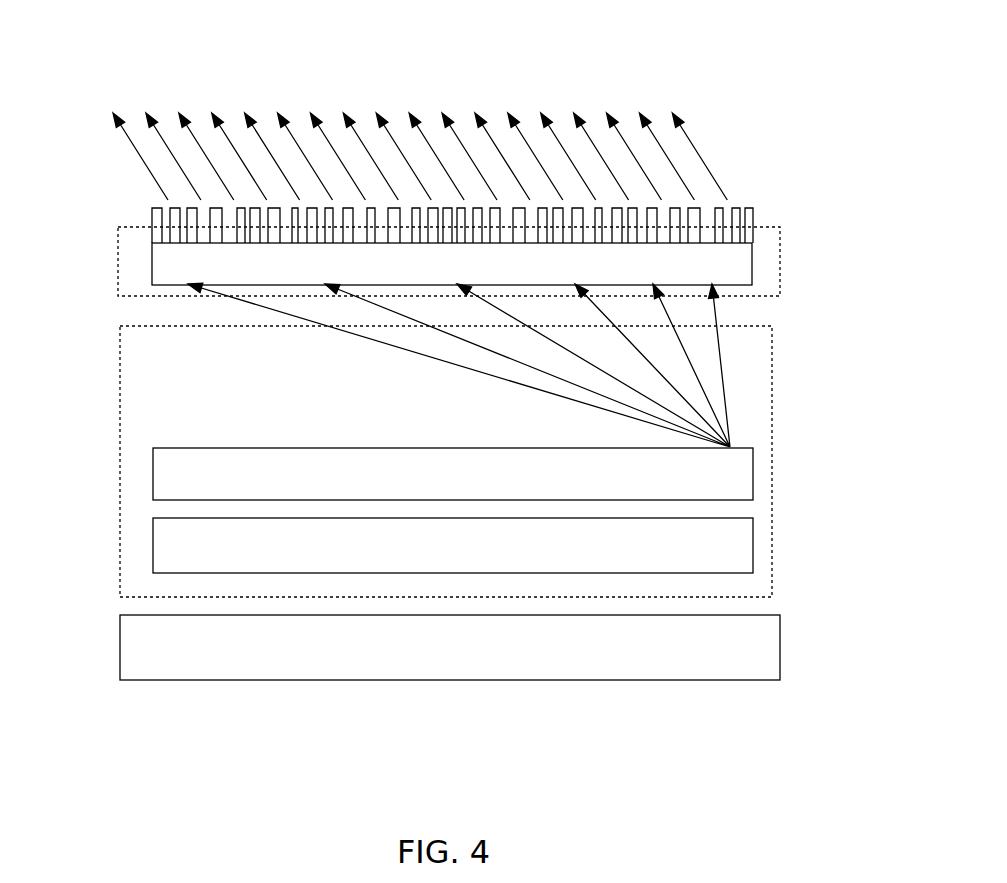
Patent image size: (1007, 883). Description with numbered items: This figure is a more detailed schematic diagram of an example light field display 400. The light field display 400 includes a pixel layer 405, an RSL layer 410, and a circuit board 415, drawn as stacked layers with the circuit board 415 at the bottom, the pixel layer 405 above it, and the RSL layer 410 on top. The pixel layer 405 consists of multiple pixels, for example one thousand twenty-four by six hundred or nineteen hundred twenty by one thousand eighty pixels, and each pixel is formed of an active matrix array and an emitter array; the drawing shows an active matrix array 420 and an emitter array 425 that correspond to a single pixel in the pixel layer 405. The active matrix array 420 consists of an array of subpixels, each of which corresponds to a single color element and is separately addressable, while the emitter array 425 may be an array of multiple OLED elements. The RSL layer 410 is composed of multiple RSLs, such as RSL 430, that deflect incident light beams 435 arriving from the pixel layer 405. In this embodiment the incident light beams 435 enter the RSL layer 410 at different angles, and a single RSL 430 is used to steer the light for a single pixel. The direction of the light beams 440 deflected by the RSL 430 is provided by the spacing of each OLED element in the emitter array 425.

The light field display 400 is at (465, 78).
The pixel layer 405 is at (120, 465).
The RSL layer 410 is at (118, 263).
The circuit board 415 is at (120, 652).
The active matrix array 420 is at (753, 548).
The emitter array 425 is at (753, 477).
The RSL 430 is at (752, 272).
The incident light beams 435 is at (727, 377).
The light beams 440 is at (710, 168).